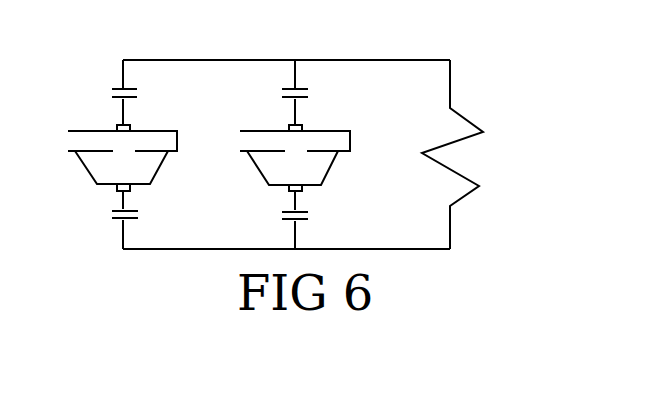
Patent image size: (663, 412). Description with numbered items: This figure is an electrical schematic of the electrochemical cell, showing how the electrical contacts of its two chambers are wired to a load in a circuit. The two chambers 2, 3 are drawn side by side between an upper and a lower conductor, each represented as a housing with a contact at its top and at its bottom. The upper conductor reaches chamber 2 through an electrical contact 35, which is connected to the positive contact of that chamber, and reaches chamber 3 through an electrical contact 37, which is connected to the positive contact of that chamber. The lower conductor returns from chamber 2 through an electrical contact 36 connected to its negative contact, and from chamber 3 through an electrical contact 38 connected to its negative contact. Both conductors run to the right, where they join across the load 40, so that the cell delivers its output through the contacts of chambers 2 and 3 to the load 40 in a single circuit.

The chamber 2 is at (122, 158).
The chamber 3 is at (295, 158).
The electrical contact 35 is at (103, 96).
The electrical contact 36 is at (104, 218).
The electrical contact 37 is at (316, 94).
The electrical contact 38 is at (316, 215).
The load 40 is at (472, 154).